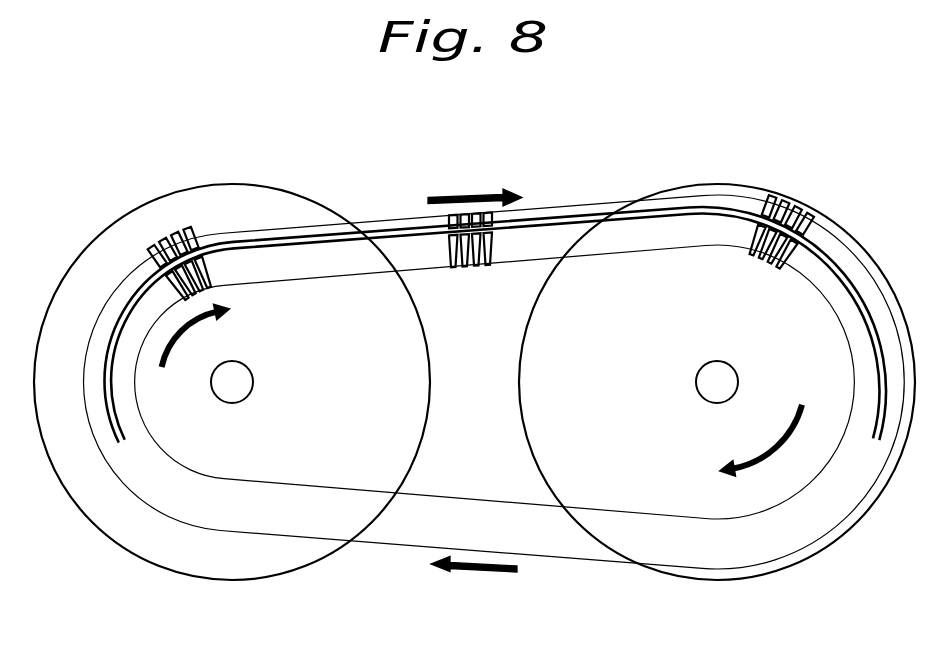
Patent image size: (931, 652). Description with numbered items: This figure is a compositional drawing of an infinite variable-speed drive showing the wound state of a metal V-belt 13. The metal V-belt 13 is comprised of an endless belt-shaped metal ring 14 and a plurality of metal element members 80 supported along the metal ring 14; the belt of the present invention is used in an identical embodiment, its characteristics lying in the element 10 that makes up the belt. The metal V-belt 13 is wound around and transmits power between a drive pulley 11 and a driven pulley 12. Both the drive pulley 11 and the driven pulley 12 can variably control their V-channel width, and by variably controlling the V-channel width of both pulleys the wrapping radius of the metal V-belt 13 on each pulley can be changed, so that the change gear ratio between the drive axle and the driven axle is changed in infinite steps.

The drive pulley 11 is at (143, 543).
The driven pulley 12 is at (800, 562).
The metal V-belt 13 is at (481, 520).
The metal ring 14 is at (392, 230).
The metal element members 80 is at (500, 270).
The element 10 is at (482, 289).